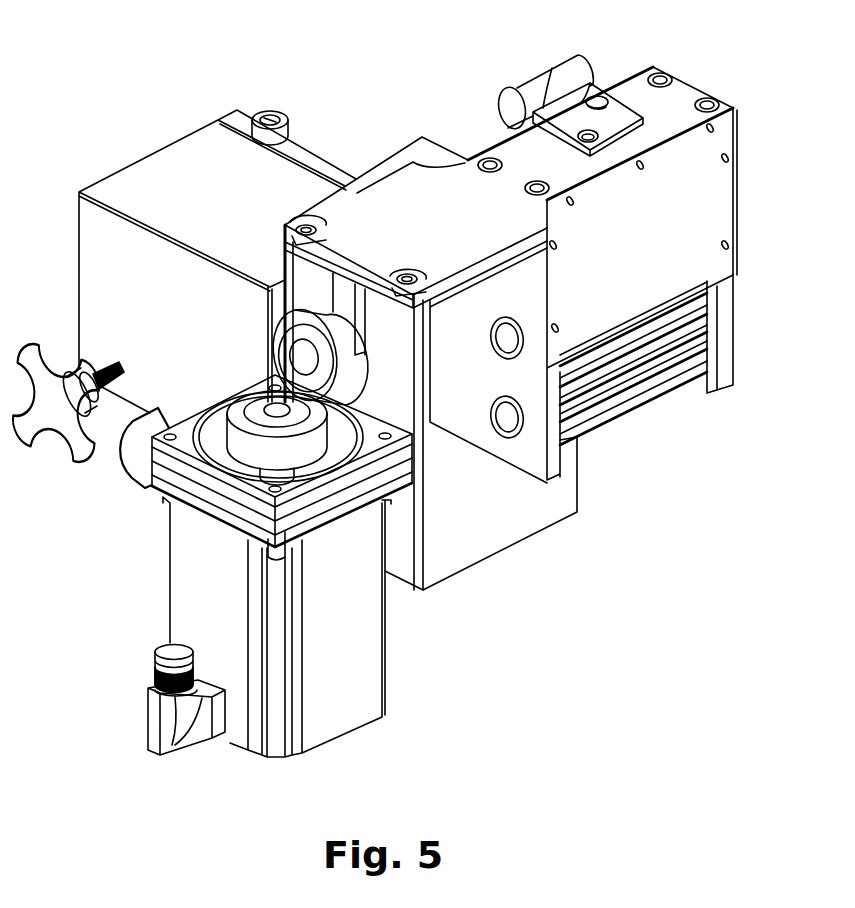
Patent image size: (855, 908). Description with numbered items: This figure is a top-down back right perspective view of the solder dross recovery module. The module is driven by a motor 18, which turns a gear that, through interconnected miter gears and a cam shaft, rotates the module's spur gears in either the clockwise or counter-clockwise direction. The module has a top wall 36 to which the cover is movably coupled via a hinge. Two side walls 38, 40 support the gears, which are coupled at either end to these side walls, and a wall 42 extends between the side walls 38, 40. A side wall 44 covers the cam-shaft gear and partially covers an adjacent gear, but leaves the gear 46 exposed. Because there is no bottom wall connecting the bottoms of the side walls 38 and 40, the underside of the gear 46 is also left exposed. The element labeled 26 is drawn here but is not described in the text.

The motor 18 is at (187, 582).
The housing block 26 is at (145, 182).
The top wall 36 is at (678, 100).
The side wall 38 is at (527, 452).
The side wall 40 is at (723, 348).
The wall 42 is at (462, 536).
The side wall 44 is at (713, 193).
The gear 46 is at (657, 373).